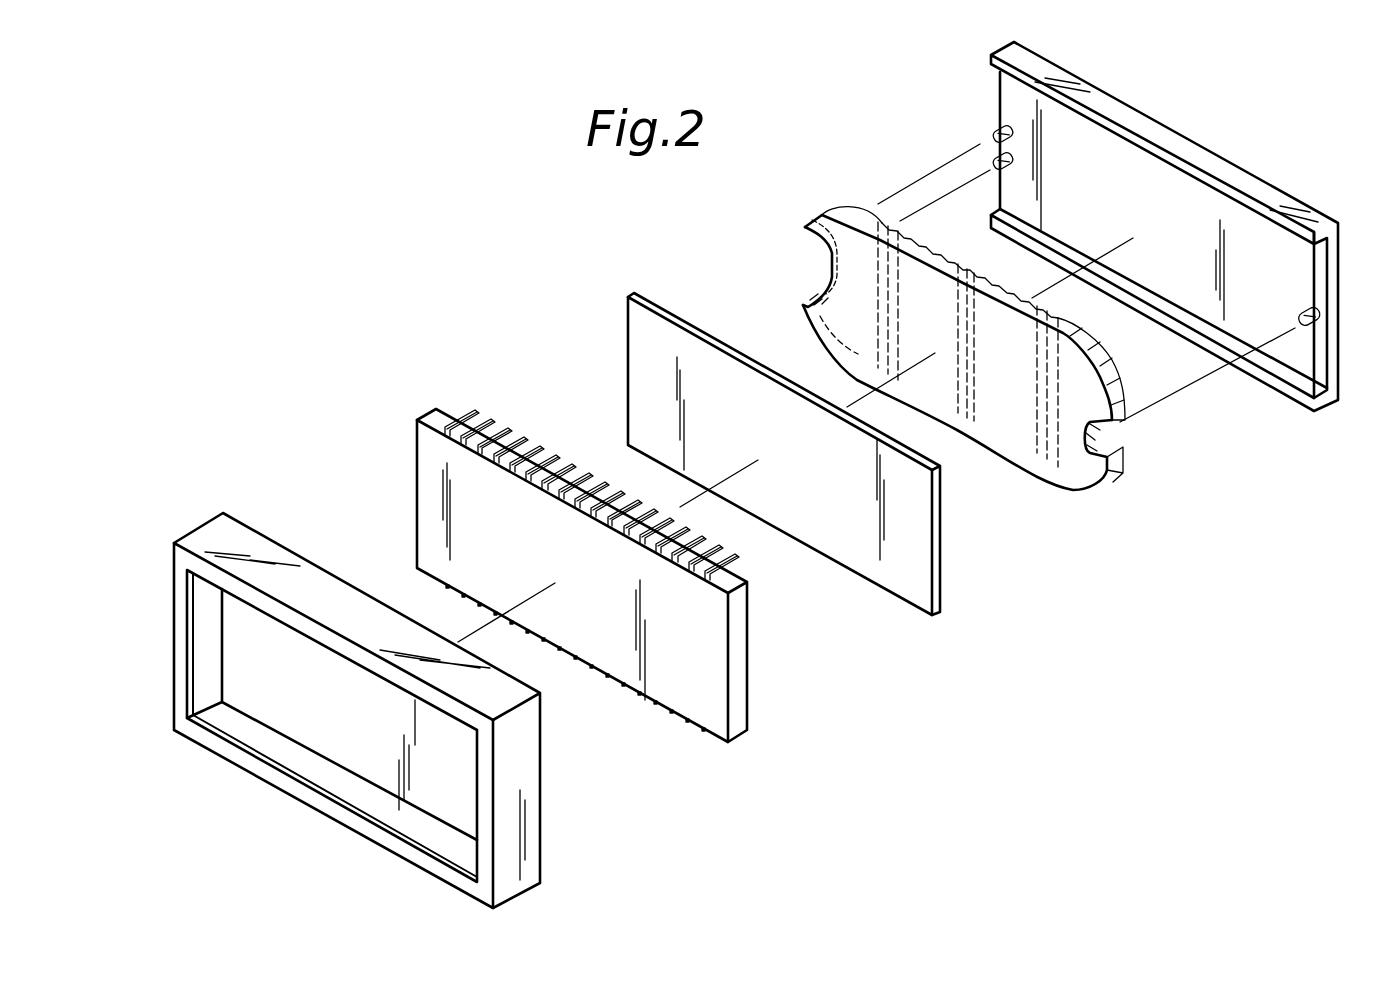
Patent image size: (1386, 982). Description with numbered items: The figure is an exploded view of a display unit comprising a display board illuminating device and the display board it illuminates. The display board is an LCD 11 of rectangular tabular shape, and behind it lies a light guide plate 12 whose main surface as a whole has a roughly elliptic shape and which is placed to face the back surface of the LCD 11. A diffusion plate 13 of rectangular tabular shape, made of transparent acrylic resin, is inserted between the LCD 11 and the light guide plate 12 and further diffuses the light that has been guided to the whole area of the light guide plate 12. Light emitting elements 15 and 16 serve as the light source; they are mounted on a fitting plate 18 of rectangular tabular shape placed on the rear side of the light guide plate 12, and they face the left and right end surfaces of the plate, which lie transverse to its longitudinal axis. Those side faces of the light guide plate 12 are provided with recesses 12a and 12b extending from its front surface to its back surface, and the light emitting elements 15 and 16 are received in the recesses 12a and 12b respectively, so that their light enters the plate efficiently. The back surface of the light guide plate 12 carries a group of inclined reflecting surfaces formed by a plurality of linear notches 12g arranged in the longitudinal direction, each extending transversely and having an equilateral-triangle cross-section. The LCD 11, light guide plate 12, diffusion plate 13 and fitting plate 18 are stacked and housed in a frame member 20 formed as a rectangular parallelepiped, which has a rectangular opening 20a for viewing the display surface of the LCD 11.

The LCD 11 is at (682, 688).
The light guide plate 12 is at (974, 362).
The recess 12a is at (1124, 433).
The recess 12b is at (812, 296).
The linear notches 12g is at (962, 268).
The diffusion plate 13 is at (848, 555).
The light emitting element 15 is at (1308, 328).
The light emitting element 16 is at (985, 142).
The fitting plate 18 is at (1277, 348).
The frame member 20 is at (265, 777).
The opening 20a is at (333, 790).